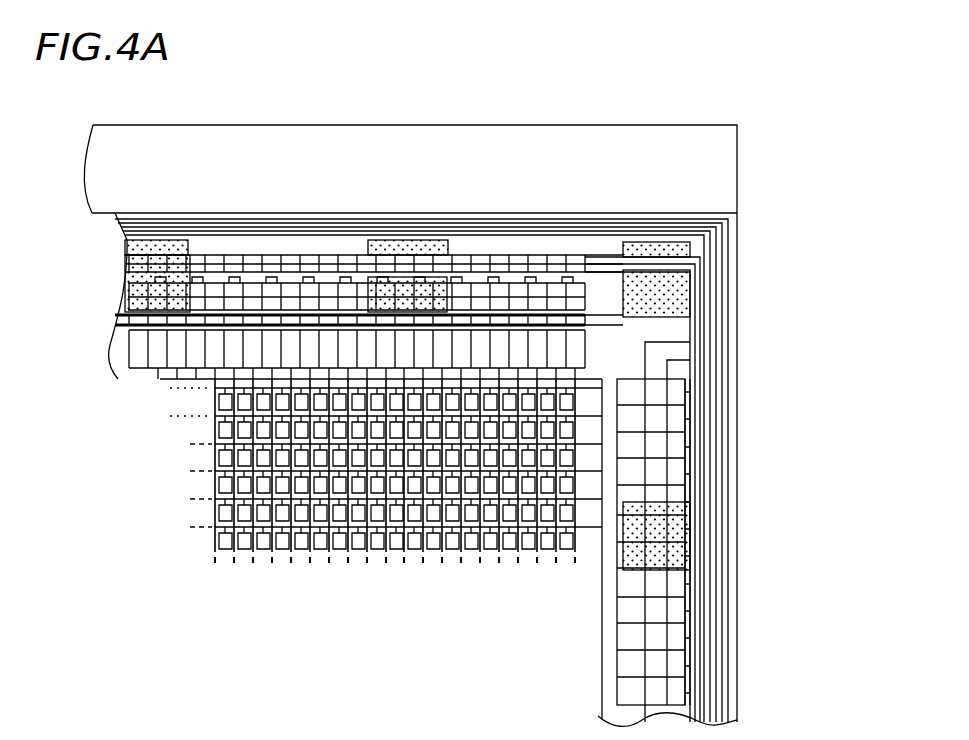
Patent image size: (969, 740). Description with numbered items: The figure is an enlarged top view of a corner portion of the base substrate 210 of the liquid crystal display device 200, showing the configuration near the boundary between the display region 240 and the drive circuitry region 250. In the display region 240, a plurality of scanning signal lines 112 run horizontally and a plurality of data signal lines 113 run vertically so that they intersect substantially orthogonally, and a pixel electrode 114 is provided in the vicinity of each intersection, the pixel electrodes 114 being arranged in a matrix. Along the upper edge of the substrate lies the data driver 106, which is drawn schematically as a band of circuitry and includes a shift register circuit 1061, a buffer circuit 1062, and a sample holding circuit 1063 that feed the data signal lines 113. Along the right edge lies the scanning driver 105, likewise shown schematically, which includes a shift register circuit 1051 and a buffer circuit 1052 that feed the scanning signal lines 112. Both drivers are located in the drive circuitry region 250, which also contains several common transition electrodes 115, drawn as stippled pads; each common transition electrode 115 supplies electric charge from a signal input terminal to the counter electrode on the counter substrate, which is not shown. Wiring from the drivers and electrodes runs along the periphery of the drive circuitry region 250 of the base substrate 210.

The liquid crystal display device 200 is at (728, 60).
The base substrate 210 is at (742, 163).
The drive circuitry region 250 is at (660, 335).
The common transition electrode 115 is at (188, 246).
The data driver 106 is at (100, 255).
The shift register circuit 1061 is at (266, 254).
The buffer circuit 1062 is at (316, 284).
The sample holding circuit 1063 is at (503, 338).
The scanning signal line 112 is at (198, 469).
The data signal line 113 is at (328, 572).
The pixel electrode 114 is at (400, 542).
The display region 240 is at (238, 608).
The scanning driver 105 is at (532, 598).
The shift register circuit 1051 is at (684, 608).
The buffer circuit 1052 is at (648, 639).